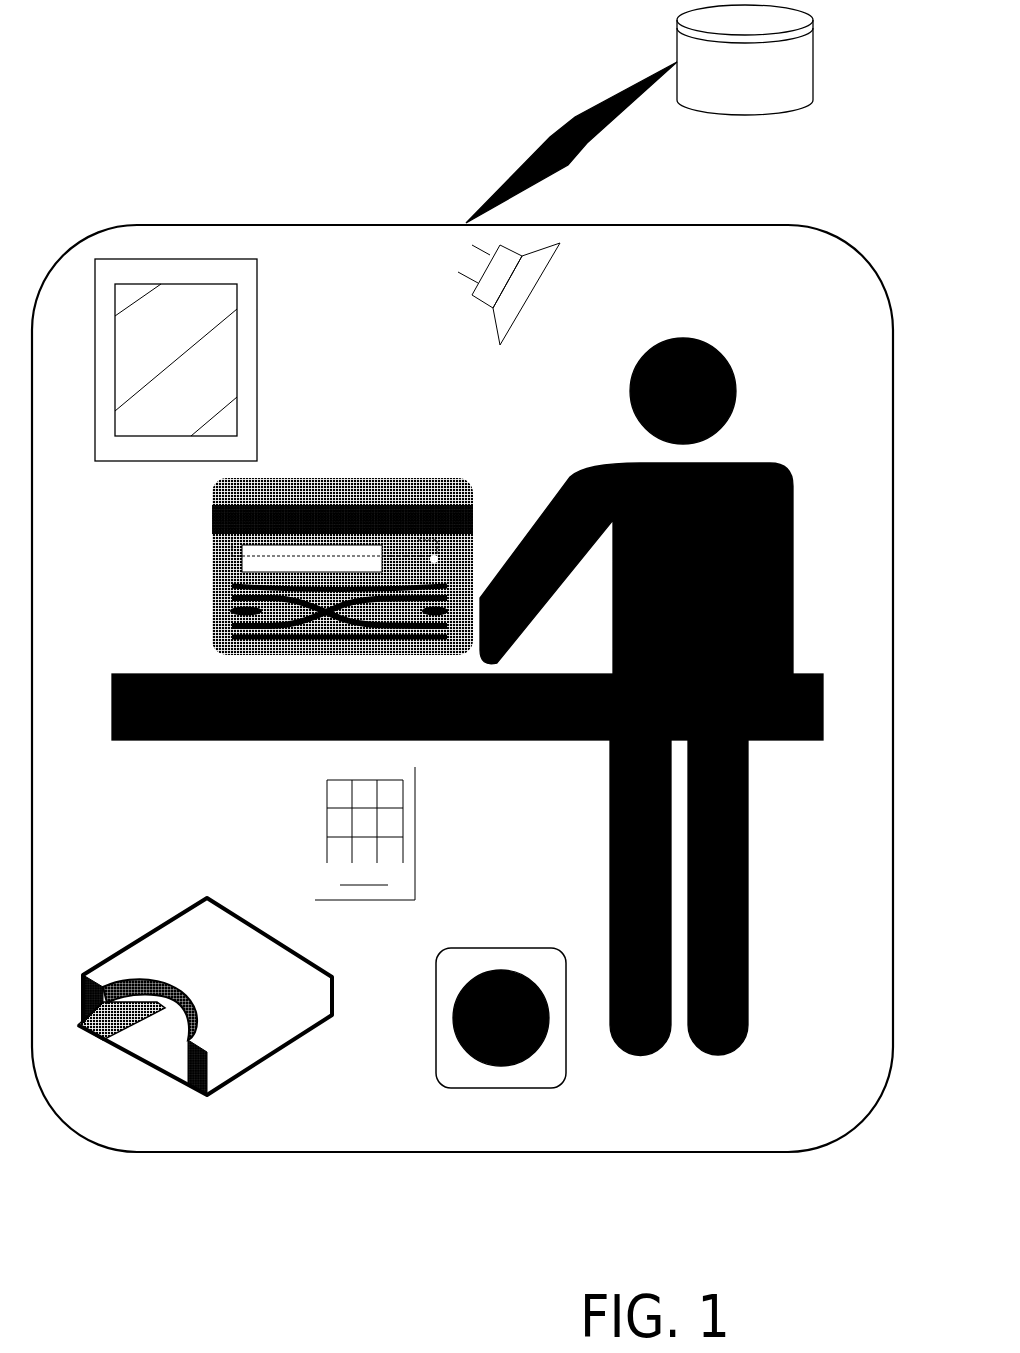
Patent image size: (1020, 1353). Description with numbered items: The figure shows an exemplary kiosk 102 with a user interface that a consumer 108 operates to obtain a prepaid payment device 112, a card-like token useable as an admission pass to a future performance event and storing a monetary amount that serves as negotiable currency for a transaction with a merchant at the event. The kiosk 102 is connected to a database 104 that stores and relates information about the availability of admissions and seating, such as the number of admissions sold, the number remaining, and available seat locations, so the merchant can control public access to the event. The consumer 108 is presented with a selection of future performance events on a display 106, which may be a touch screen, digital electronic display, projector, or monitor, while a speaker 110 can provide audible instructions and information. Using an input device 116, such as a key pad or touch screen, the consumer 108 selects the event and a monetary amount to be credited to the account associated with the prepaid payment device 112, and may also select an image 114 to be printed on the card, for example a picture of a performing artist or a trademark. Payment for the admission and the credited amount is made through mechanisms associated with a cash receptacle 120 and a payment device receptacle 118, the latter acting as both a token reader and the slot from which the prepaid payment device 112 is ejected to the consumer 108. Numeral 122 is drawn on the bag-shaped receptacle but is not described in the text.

The kiosk 102 is at (333, 223).
The database 104 is at (745, 115).
The display 106 is at (175, 258).
The consumer 108 is at (712, 321).
The speaker 110 is at (497, 308).
The prepaid payment device 112 is at (407, 477).
The image 114 is at (230, 612).
The input device 116 is at (325, 843).
The payment device receptacle 118 is at (205, 985).
The cash receptacle 120 is at (473, 948).
The bag handle 122 is at (160, 1070).